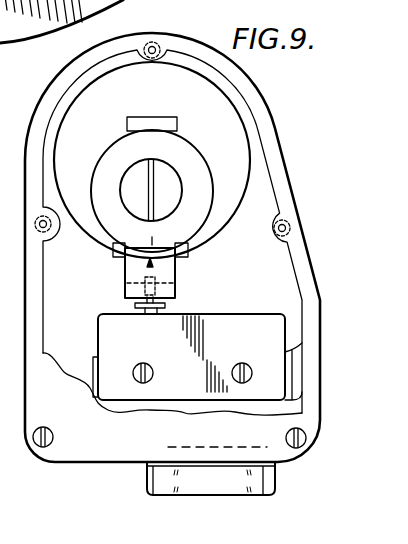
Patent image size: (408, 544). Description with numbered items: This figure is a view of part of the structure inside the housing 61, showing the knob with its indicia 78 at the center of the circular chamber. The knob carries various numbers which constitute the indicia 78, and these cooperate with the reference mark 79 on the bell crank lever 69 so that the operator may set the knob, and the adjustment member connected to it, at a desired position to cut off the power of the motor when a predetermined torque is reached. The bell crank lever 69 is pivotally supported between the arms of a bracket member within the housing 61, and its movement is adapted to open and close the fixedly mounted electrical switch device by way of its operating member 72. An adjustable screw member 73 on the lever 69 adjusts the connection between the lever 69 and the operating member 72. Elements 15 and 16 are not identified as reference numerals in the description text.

The housing 61 is at (273, 118).
The indicia 78 is at (98, 166).
The adjusting shaft with slot 16 is at (178, 166).
The index tab 15 is at (180, 136).
The reference mark 79 is at (175, 263).
The bell crank lever 69 is at (125, 263).
The adjustable screw member 73 is at (165, 307).
The operating member 72 is at (156, 315).